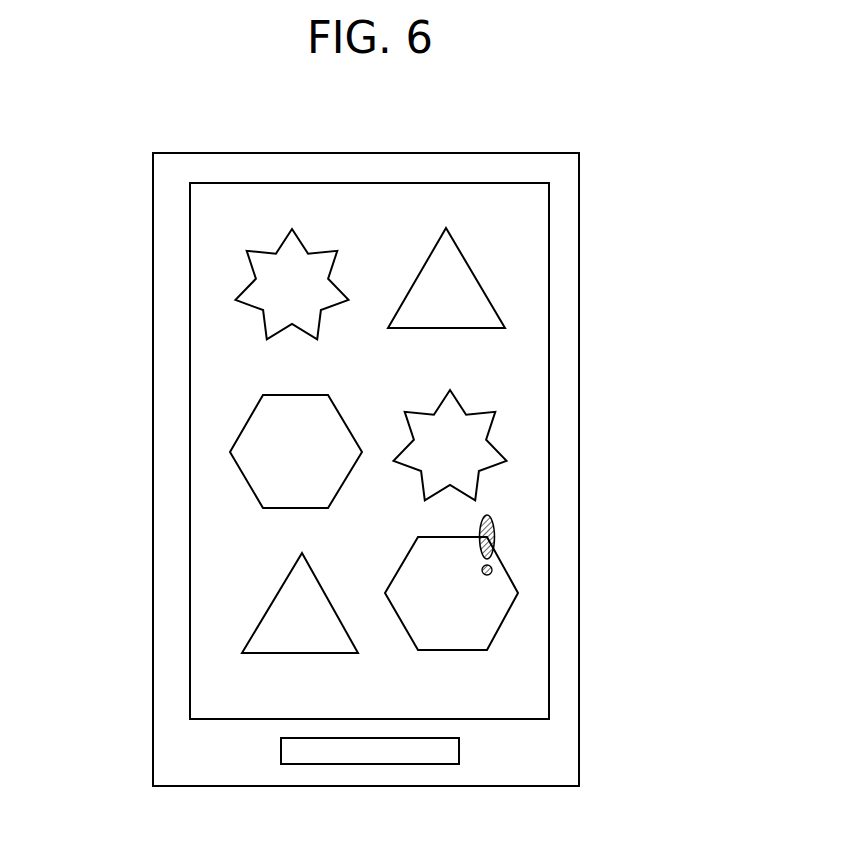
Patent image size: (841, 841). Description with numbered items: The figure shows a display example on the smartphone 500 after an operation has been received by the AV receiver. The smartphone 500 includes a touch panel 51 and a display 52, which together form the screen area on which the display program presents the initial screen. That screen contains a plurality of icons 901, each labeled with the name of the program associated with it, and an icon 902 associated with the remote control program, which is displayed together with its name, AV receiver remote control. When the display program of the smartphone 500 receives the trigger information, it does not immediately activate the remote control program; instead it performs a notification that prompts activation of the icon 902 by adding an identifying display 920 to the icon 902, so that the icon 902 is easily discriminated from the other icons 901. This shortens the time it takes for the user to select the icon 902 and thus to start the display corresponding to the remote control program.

The smartphone 500 is at (579, 153).
The touch panel 51 is at (549, 258).
The display 52 is at (456, 431).
The icons 901 is at (273, 303).
The icon 902 is at (497, 577).
The identifying display 920 is at (494, 533).